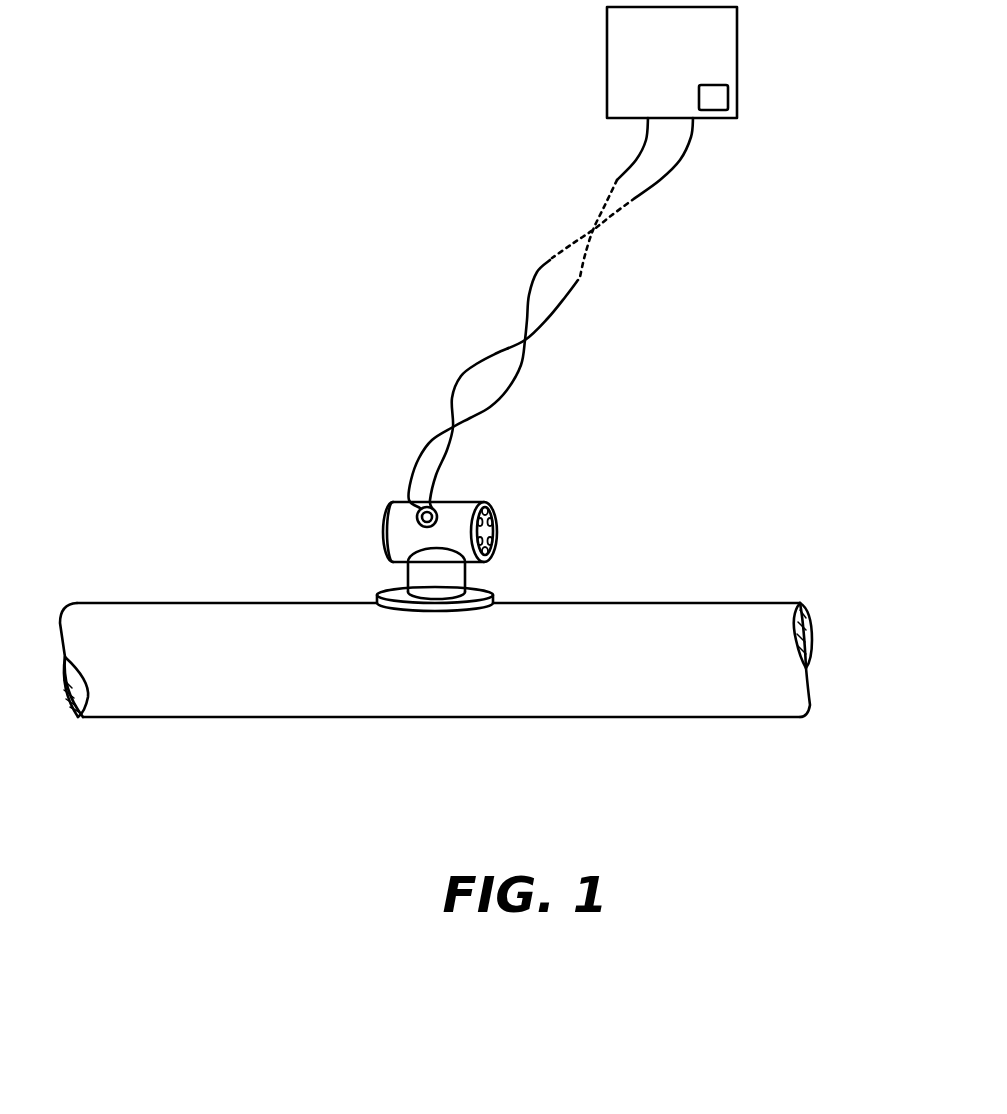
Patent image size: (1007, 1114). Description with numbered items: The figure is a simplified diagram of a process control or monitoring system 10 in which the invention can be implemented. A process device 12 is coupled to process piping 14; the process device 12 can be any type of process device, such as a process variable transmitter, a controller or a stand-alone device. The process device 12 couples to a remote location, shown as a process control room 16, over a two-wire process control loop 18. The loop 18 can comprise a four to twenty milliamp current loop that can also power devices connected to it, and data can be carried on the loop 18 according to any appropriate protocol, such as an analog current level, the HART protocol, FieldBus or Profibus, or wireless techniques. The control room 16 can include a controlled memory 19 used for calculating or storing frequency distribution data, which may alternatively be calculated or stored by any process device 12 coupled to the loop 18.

The process control or monitoring system 10 is at (267, 177).
The process device 12 is at (387, 507).
The process piping 14 is at (580, 613).
The process control room 16 is at (672, 62).
The two-wire process control loop 18 is at (515, 375).
The controlled memory 19 is at (715, 118).